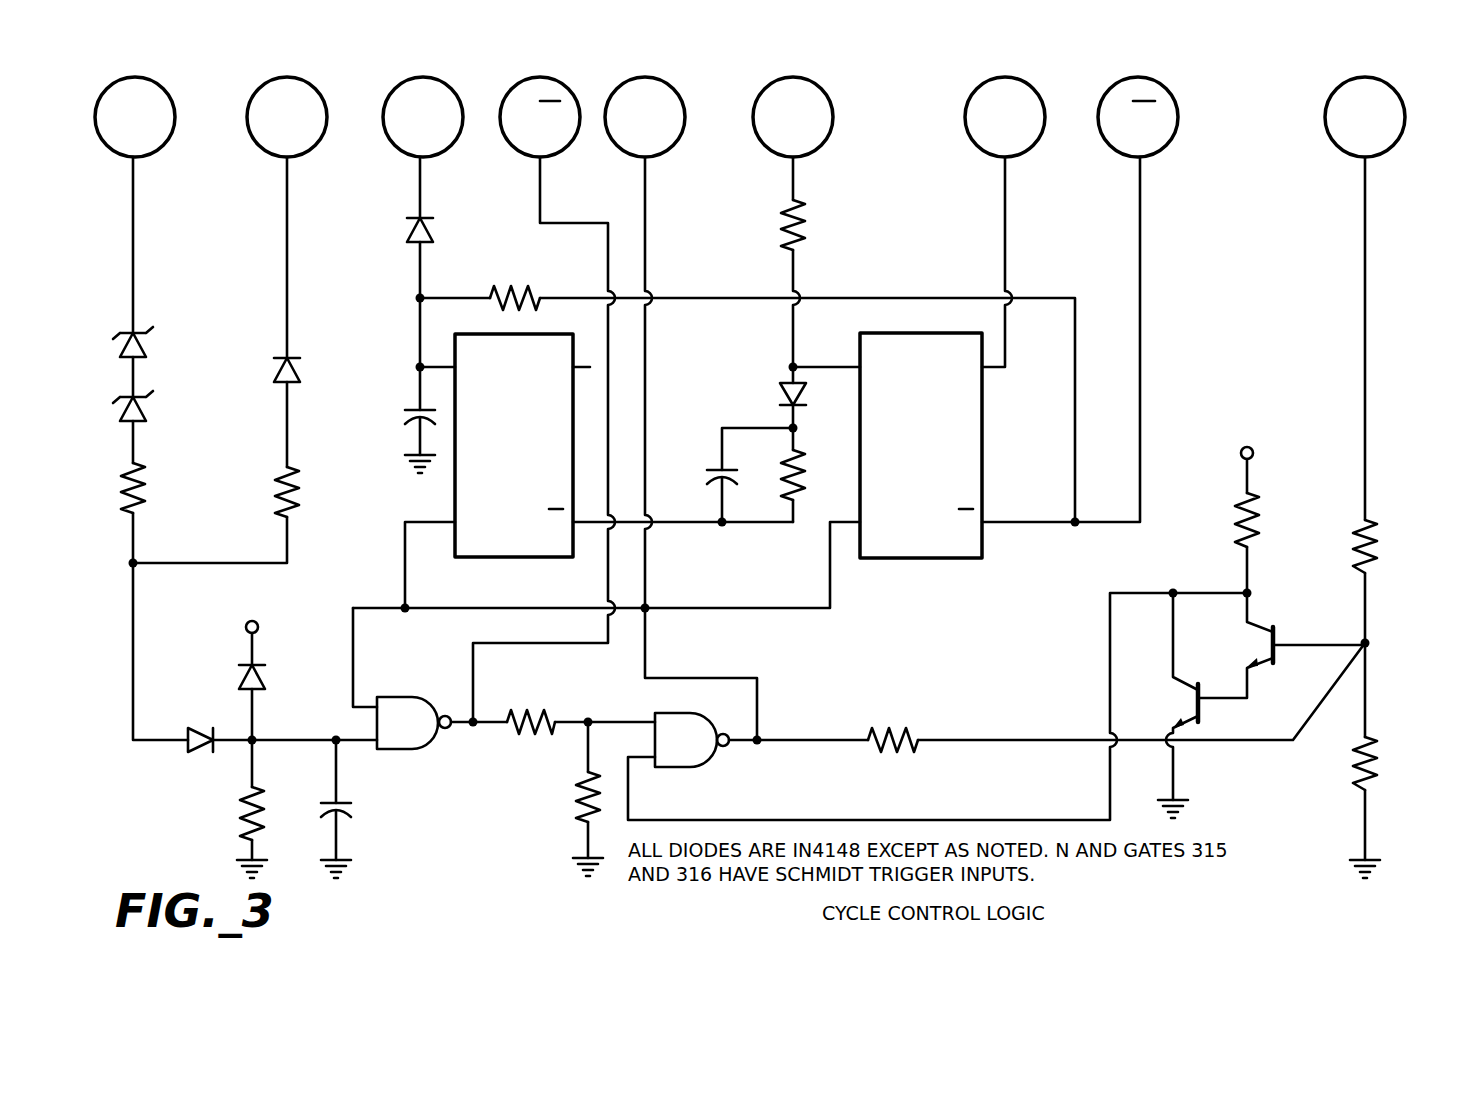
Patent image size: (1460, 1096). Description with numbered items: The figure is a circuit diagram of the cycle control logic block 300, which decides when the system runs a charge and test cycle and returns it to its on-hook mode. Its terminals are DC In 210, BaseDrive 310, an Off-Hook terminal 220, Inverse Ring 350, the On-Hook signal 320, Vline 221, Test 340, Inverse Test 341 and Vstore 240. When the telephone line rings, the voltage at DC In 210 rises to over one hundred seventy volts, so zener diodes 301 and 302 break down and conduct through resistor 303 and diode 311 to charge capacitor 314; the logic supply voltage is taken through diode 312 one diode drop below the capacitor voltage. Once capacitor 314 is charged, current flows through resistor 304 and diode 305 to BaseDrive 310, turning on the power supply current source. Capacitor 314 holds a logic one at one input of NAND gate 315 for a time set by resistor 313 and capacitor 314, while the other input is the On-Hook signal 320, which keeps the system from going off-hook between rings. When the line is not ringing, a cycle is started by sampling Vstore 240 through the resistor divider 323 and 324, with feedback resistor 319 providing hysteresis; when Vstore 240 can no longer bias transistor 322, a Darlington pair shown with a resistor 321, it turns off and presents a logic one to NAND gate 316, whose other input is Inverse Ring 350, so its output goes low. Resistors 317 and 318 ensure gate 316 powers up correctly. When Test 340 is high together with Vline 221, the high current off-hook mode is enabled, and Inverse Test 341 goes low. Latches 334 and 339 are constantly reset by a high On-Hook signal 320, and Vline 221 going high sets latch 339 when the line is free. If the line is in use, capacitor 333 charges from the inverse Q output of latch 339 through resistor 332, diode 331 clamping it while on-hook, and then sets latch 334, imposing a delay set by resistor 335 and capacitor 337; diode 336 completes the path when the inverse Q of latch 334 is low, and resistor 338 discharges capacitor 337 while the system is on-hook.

The cycle control logic block 300 is at (962, 45).
The DC In 210 is at (148, 80).
The BaseDrive 310 is at (299, 80).
The Off-Hook terminal 220 is at (436, 80).
The Inverse Ring 350 is at (546, 80).
The On-Hook signal 320 is at (656, 80).
The Vline 221 is at (806, 80).
The Test 340 is at (1016, 80).
The Inverse Test 341 is at (1146, 80).
The Vstore voltage 240 is at (1376, 80).
The zener diode 301 is at (148, 345).
The zener diode 302 is at (148, 408).
The resistor 303 is at (150, 487).
The resistor 304 is at (282, 510).
The diode 305 is at (300, 366).
The diode 311 is at (205, 728).
The diode 312 is at (263, 680).
The resistor 313 is at (264, 790).
The capacitor 314 is at (343, 800).
The NAND gate 315 is at (405, 752).
The NAND gate 316 is at (683, 770).
The resistor 317 is at (512, 732).
The resistor 318 is at (582, 815).
The feedback resistor 319 is at (895, 748).
The resistor 1M 321 is at (1257, 520).
The transistor 322 is at (1178, 690).
The resistor divider resistor 323 is at (1376, 552).
The resistor divider resistor 324 is at (1377, 765).
The diode 331 is at (406, 232).
The resistor 332 is at (500, 310).
The capacitor 333 is at (412, 412).
The latch 334 is at (512, 558).
The resistor 335 is at (782, 222).
The diode 336 is at (780, 392).
The capacitor 337 is at (726, 468).
The resistor 338 is at (786, 492).
The latch 339 is at (985, 445).